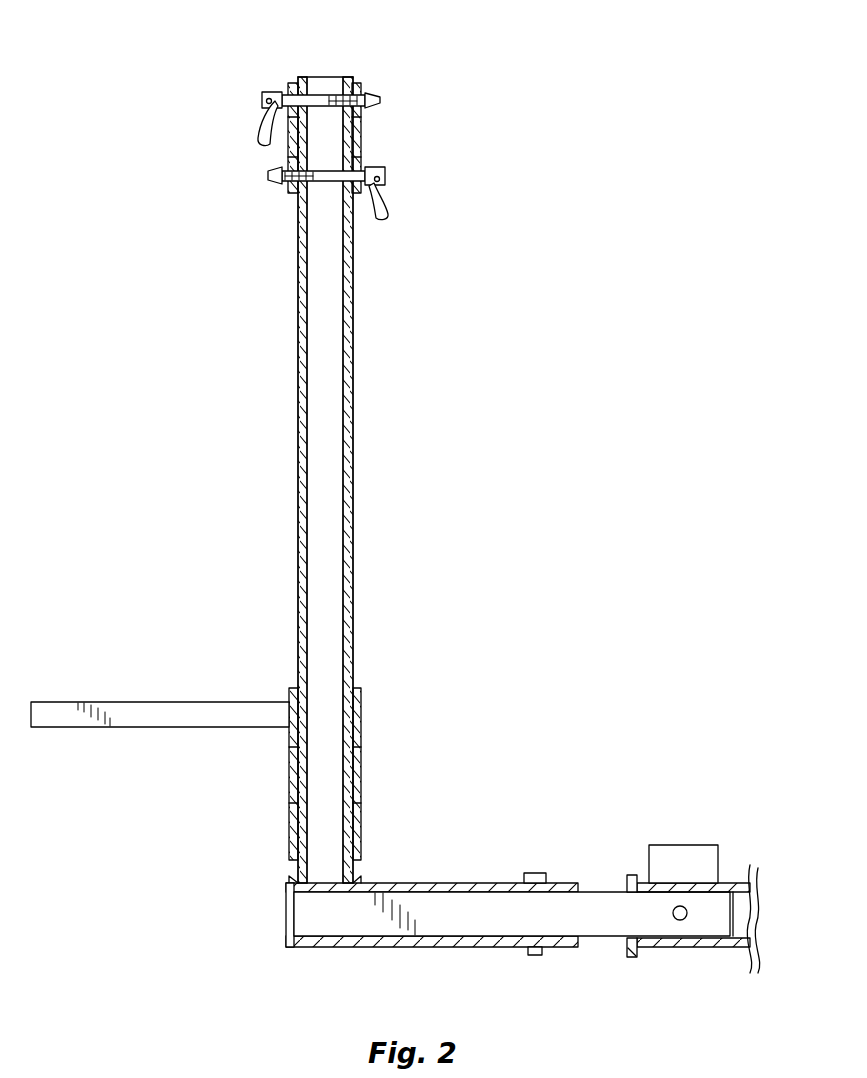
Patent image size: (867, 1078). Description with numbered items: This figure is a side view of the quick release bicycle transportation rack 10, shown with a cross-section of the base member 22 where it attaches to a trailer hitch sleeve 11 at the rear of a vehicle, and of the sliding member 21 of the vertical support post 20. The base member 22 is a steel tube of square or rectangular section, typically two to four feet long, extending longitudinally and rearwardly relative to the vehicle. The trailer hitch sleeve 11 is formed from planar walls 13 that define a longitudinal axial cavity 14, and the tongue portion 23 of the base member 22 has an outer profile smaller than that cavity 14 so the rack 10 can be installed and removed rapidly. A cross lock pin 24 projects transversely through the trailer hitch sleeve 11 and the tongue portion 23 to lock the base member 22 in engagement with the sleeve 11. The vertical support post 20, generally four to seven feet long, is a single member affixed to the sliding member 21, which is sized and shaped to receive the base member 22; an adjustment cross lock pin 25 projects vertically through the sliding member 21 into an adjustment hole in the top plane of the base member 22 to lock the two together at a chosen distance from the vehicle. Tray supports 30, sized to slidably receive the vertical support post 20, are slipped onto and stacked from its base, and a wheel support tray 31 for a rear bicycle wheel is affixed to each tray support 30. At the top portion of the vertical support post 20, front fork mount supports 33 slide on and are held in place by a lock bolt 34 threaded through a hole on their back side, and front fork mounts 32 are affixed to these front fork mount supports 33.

The bicycle transportation rack 10 is at (412, 311).
The trailer hitch sleeve 11 is at (632, 875).
The planar walls 13 is at (737, 948).
The cavity 14 is at (715, 910).
The vertical support post 20 is at (331, 458).
The sliding member 21 is at (400, 883).
The base member 22 is at (590, 888).
The tongue portion 23 is at (708, 922).
The cross lock pin 24 is at (677, 920).
The adjustment cross lock pin 25 is at (536, 873).
The tray supports 30 is at (361, 702).
The wheel support trays 31 is at (163, 712).
The front fork mounts 32 is at (280, 96).
The front fork mount supports 33 is at (355, 106).
The lock bolt 34 is at (374, 93).